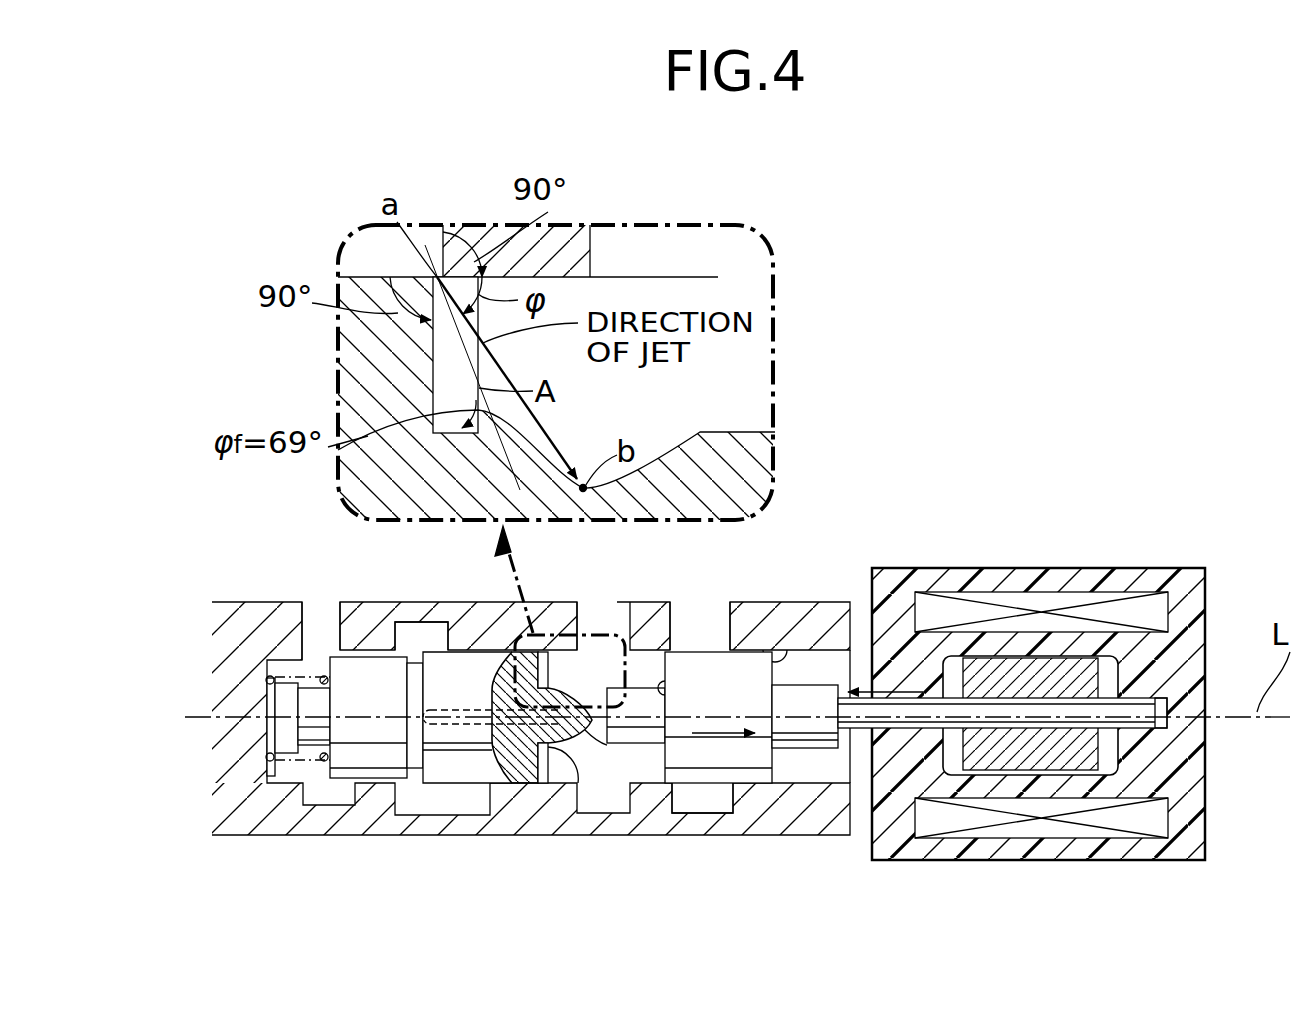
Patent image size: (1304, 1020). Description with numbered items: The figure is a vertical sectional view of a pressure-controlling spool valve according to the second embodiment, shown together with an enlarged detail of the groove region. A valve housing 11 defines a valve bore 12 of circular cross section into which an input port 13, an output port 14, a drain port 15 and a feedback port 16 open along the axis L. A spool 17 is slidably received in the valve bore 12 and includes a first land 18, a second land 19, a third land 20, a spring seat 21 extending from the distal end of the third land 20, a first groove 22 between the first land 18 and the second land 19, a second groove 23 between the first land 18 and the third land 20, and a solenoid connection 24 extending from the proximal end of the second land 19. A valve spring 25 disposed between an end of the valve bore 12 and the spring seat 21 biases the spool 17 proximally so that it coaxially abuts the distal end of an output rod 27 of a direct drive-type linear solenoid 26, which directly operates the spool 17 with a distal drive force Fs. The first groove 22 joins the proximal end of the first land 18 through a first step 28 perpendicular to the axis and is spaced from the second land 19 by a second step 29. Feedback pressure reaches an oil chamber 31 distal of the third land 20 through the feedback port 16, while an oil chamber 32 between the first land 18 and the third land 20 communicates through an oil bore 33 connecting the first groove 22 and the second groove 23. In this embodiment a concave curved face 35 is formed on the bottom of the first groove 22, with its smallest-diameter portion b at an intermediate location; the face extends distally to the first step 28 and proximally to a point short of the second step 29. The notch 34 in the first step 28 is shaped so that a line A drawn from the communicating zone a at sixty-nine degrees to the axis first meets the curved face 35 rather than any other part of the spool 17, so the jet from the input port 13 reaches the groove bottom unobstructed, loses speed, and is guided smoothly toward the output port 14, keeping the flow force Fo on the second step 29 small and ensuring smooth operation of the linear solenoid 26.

The valve housing 11 is at (236, 598).
The valve bore 12 is at (788, 648).
The input port 13 is at (500, 602).
The output port 14 is at (590, 610).
The drain port 15 is at (670, 620).
The feedback port 16 is at (303, 617).
The spool 17 is at (710, 644).
The first land 18 is at (465, 765).
The second land 19 is at (705, 777).
The third land 20 is at (367, 763).
The spring seat 21 is at (313, 753).
The first groove 22 is at (625, 668).
The second groove 23 is at (417, 770).
The solenoid connection 24 is at (828, 650).
The valve spring 25 is at (272, 770).
The direct drive-type linear solenoid 26 is at (1006, 564).
The output rod 27 is at (850, 724).
The first step 28 is at (552, 670).
The second step 29 is at (658, 688).
The oil chamber 31 is at (283, 663).
The oil chamber 32 is at (418, 636).
The oil bore 33 is at (405, 683).
The notch 34 is at (547, 768).
The concave curved face 35 is at (568, 742).